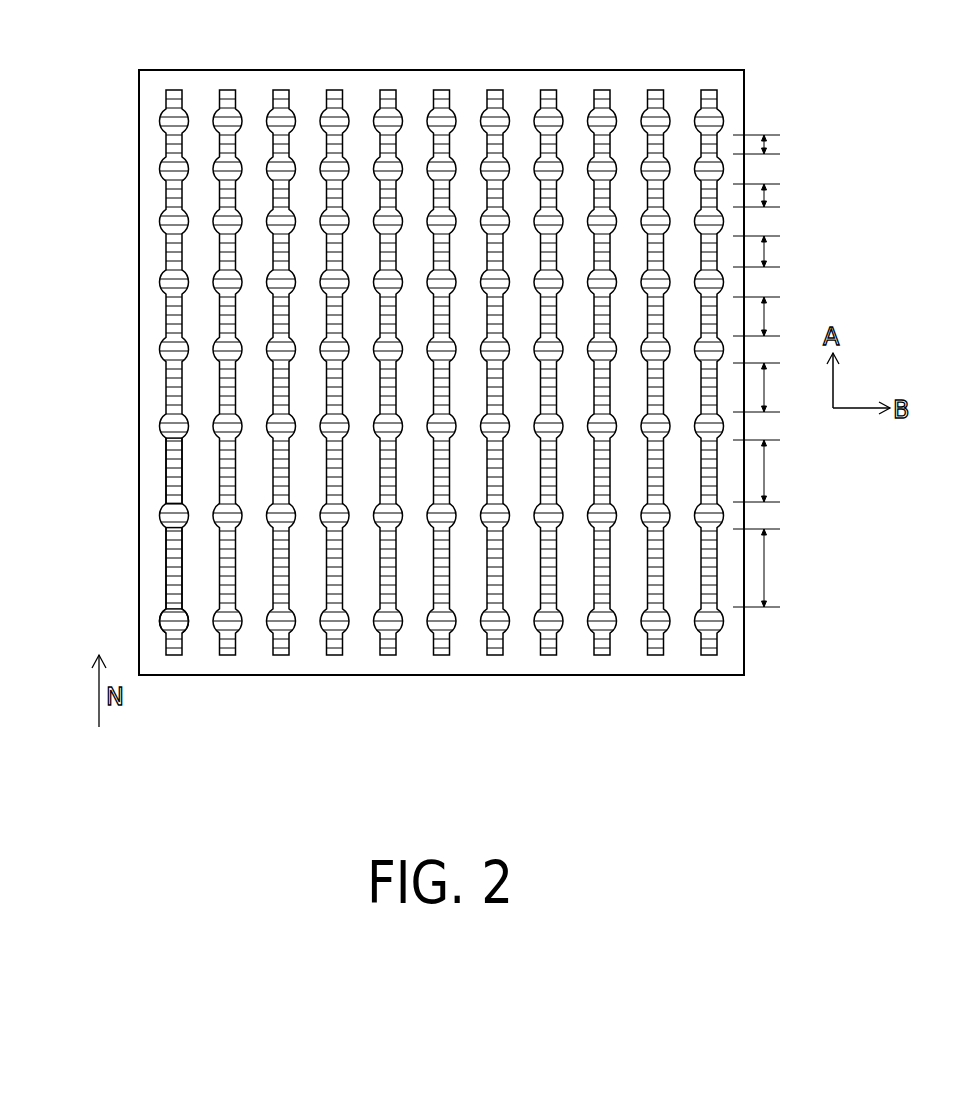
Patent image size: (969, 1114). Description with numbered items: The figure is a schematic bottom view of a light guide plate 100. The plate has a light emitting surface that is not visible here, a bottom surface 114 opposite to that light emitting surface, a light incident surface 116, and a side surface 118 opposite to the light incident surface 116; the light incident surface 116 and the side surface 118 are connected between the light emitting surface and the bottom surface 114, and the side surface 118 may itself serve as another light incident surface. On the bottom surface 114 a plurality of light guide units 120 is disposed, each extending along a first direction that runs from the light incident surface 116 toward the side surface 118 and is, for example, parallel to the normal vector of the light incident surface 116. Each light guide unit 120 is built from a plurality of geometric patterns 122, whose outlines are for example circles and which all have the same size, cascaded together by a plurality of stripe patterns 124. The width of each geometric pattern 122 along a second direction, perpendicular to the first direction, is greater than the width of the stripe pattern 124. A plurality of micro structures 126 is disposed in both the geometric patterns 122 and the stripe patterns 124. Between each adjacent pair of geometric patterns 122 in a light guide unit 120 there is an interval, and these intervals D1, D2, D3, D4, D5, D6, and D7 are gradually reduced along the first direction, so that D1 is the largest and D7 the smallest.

The light guide plate 100 is at (426, 399).
The bottom surface 114 is at (735, 85).
The light incident surface 116 is at (698, 675).
The side surface 118 is at (668, 70).
The light guide unit 120 is at (105, 372).
The geometric pattern 122 is at (168, 608).
The stripe pattern 124 is at (167, 576).
The micro structure 126 is at (178, 490).
The interval D1 is at (767, 564).
The interval D2 is at (767, 466).
The interval D3 is at (767, 384).
The interval D4 is at (767, 311).
The interval D5 is at (767, 248).
The interval D6 is at (767, 191).
The interval D7 is at (767, 142).